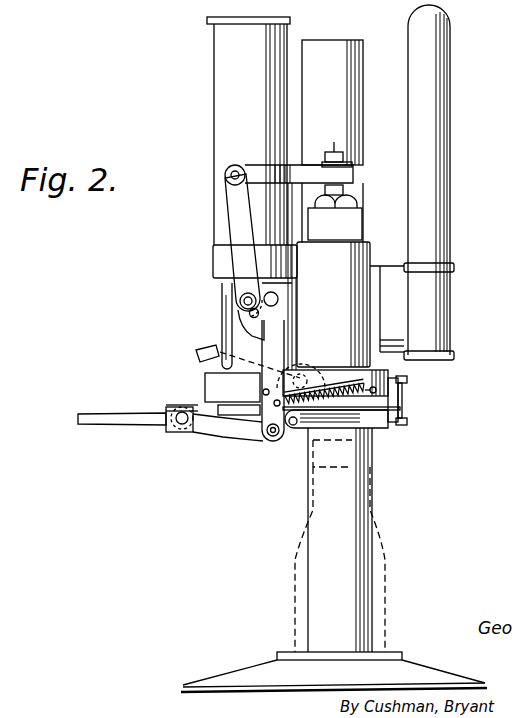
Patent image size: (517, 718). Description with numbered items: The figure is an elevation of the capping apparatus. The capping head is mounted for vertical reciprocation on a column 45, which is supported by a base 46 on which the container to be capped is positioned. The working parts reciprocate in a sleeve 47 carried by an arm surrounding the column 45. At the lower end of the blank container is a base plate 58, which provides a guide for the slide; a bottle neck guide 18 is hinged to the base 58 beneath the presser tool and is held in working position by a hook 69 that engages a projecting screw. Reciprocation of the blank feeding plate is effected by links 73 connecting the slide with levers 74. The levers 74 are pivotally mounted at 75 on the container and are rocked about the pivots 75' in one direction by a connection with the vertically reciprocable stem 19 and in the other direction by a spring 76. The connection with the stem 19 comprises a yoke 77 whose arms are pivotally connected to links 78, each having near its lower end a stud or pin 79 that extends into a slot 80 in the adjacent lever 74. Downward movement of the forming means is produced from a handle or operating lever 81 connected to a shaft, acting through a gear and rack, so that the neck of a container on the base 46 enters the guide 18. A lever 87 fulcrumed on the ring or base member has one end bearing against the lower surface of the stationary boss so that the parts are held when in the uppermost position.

The bottle neck guide 18 is at (358, 427).
The vertically reciprocable stem 19 is at (345, 190).
The column 45 is at (343, 484).
The base 46 is at (238, 675).
The sleeve 47 is at (340, 309).
The base plate 58 is at (152, 423).
The hook 69 is at (404, 397).
The links 73 is at (227, 428).
The levers 74 is at (293, 347).
The pivot 75 is at (285, 294).
The pivots 75' is at (301, 285).
The spring 76 is at (325, 380).
The yoke 77 is at (305, 165).
The links 78 is at (238, 207).
The stud or pin 79 is at (240, 302).
The slot 80 is at (249, 314).
The handle or operating lever 81 is at (432, 167).
The lever 87 is at (199, 353).